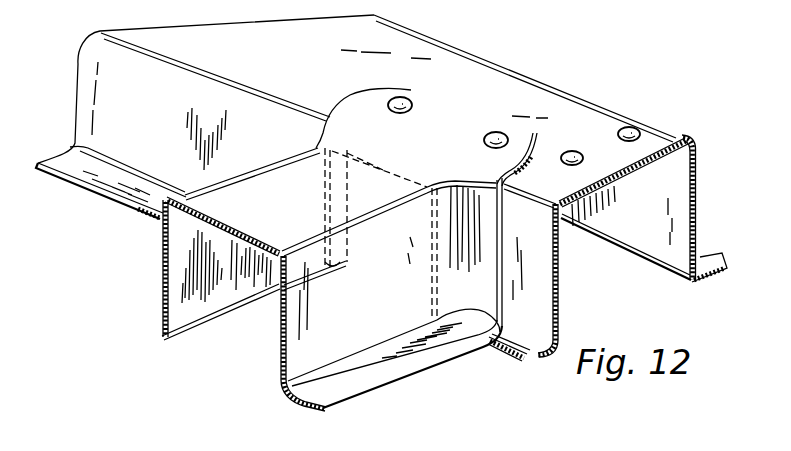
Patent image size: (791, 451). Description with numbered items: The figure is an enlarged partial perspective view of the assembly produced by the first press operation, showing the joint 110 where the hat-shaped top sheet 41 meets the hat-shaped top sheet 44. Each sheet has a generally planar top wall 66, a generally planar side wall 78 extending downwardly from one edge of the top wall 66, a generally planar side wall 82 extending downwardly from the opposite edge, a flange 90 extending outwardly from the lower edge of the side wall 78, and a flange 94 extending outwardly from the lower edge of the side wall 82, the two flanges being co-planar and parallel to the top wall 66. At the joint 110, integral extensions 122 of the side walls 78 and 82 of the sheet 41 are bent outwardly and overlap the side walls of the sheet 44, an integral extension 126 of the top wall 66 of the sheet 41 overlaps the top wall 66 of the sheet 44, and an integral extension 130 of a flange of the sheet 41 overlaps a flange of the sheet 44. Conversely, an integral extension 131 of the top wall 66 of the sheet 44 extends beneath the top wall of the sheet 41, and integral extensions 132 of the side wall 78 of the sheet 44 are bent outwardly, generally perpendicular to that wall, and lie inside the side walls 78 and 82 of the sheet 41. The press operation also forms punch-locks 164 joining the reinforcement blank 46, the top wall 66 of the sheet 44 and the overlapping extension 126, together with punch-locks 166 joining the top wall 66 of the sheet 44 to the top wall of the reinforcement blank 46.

The top sheet 41 is at (120, 226).
The top sheet 44 is at (706, 192).
The reinforcement blank 46 is at (626, 186).
The top wall 66 is at (418, 45).
The side wall 78 is at (168, 107).
The side wall 82 is at (280, 355).
The flange 90 is at (138, 327).
The flange 94 is at (372, 370).
The joint 110 is at (338, 92).
The integral extension of side wall 122 is at (487, 238).
The integral extension of top wall 126 is at (416, 94).
The integral extension of flange 130 is at (472, 322).
The integral extension of top wall 131 is at (349, 207).
The integral extension of side wall 132 is at (360, 253).
The punch-lock 164 is at (417, 96).
The punch-lock 166 is at (638, 125).